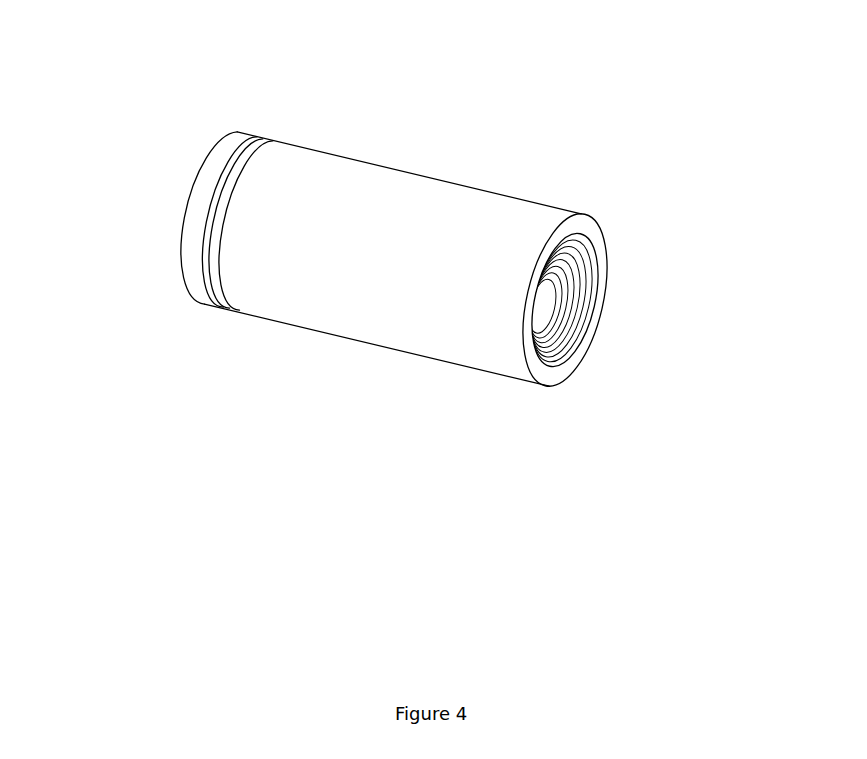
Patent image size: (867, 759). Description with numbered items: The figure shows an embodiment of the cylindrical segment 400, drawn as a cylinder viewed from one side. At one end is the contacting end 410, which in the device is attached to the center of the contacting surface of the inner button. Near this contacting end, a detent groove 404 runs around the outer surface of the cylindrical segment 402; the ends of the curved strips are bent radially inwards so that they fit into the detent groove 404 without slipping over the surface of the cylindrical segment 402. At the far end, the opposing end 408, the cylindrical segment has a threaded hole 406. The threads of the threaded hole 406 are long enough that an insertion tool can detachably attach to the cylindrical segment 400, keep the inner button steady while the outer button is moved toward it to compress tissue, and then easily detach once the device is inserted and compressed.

The cylindrical segment 400 is at (394, 166).
The surface of the cylindrical segment 402 is at (490, 217).
The detent groove 404 is at (222, 310).
The threaded hole 406 is at (598, 268).
The opposing end 408 is at (550, 375).
The contacting end 410 is at (237, 132).